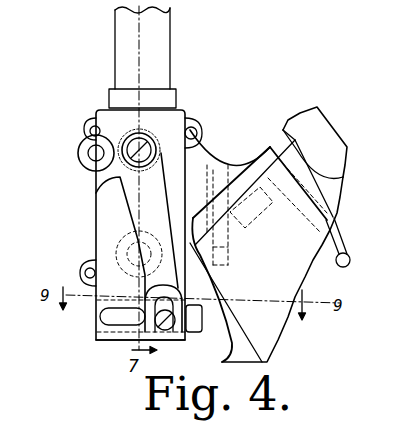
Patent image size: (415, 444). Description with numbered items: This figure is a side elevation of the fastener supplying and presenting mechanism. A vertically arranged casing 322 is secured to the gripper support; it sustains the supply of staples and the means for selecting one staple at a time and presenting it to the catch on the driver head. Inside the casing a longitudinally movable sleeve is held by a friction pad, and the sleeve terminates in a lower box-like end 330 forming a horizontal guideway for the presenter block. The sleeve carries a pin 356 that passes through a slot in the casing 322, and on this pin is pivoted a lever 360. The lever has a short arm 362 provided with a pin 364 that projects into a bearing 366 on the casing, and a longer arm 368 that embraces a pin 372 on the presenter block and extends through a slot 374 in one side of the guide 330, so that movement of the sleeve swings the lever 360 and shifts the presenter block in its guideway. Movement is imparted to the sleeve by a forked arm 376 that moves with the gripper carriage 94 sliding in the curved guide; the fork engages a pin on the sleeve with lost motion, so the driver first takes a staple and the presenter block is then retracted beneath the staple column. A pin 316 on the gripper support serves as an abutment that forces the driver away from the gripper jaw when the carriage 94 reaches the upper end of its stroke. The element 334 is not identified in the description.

The spindle shaft 334 is at (171, 66).
The casing 322 is at (100, 213).
The bearing 366 is at (84, 136).
The pin 364 is at (88, 153).
The pin 356 is at (134, 138).
The short arm 362 is at (96, 193).
The lever 360 is at (145, 212).
The longer arm 368 is at (152, 278).
The slot 374 is at (110, 318).
The box-like end 330 is at (118, 341).
The pin 372 is at (164, 330).
The gripper carriage 94 is at (298, 263).
The pin 316 is at (347, 253).
The forked arm 376 is at (248, 363).